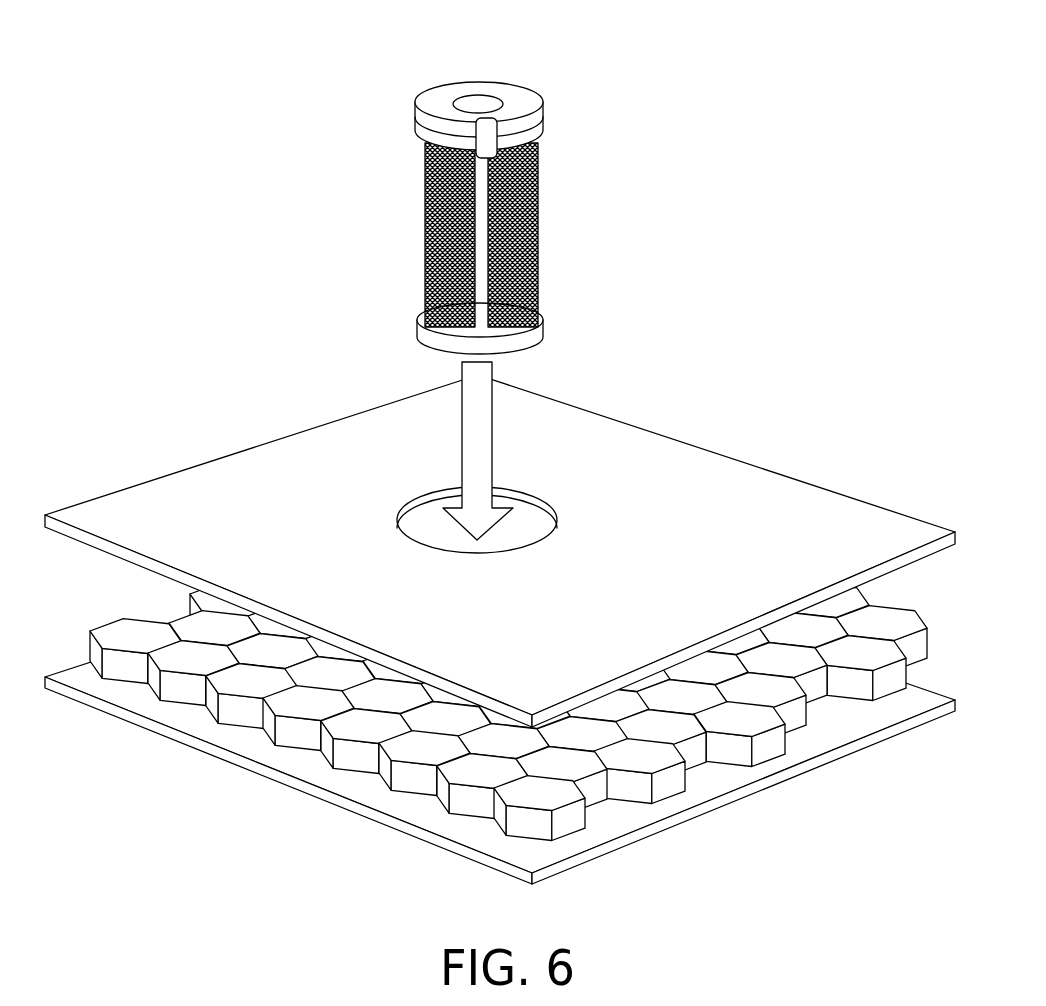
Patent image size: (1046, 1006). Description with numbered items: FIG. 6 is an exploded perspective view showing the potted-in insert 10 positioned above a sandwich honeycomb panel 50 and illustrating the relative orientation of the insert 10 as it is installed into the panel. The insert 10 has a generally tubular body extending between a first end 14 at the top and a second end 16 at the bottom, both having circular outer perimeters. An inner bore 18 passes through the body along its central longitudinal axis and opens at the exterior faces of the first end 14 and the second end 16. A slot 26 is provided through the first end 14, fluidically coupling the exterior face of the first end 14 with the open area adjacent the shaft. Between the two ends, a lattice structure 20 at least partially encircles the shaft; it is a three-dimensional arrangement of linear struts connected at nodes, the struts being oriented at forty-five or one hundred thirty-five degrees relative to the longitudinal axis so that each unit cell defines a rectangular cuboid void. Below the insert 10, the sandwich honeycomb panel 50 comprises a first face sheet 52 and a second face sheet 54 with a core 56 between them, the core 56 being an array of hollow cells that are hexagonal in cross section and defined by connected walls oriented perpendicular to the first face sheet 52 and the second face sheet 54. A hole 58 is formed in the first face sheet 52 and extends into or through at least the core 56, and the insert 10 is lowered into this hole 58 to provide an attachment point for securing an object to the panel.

The potted-in insert 10 is at (480, 200).
The first end 14 is at (524, 84).
The second end 16 is at (430, 346).
The inner bore 18 is at (472, 95).
The lattice structure 20 is at (537, 228).
The slot 26 is at (545, 127).
The sandwich honeycomb panel 50 is at (500, 608).
The first face sheet 52 is at (163, 490).
The second face sheet 54 is at (240, 772).
The core 56 is at (882, 630).
The hole 58 is at (538, 500).